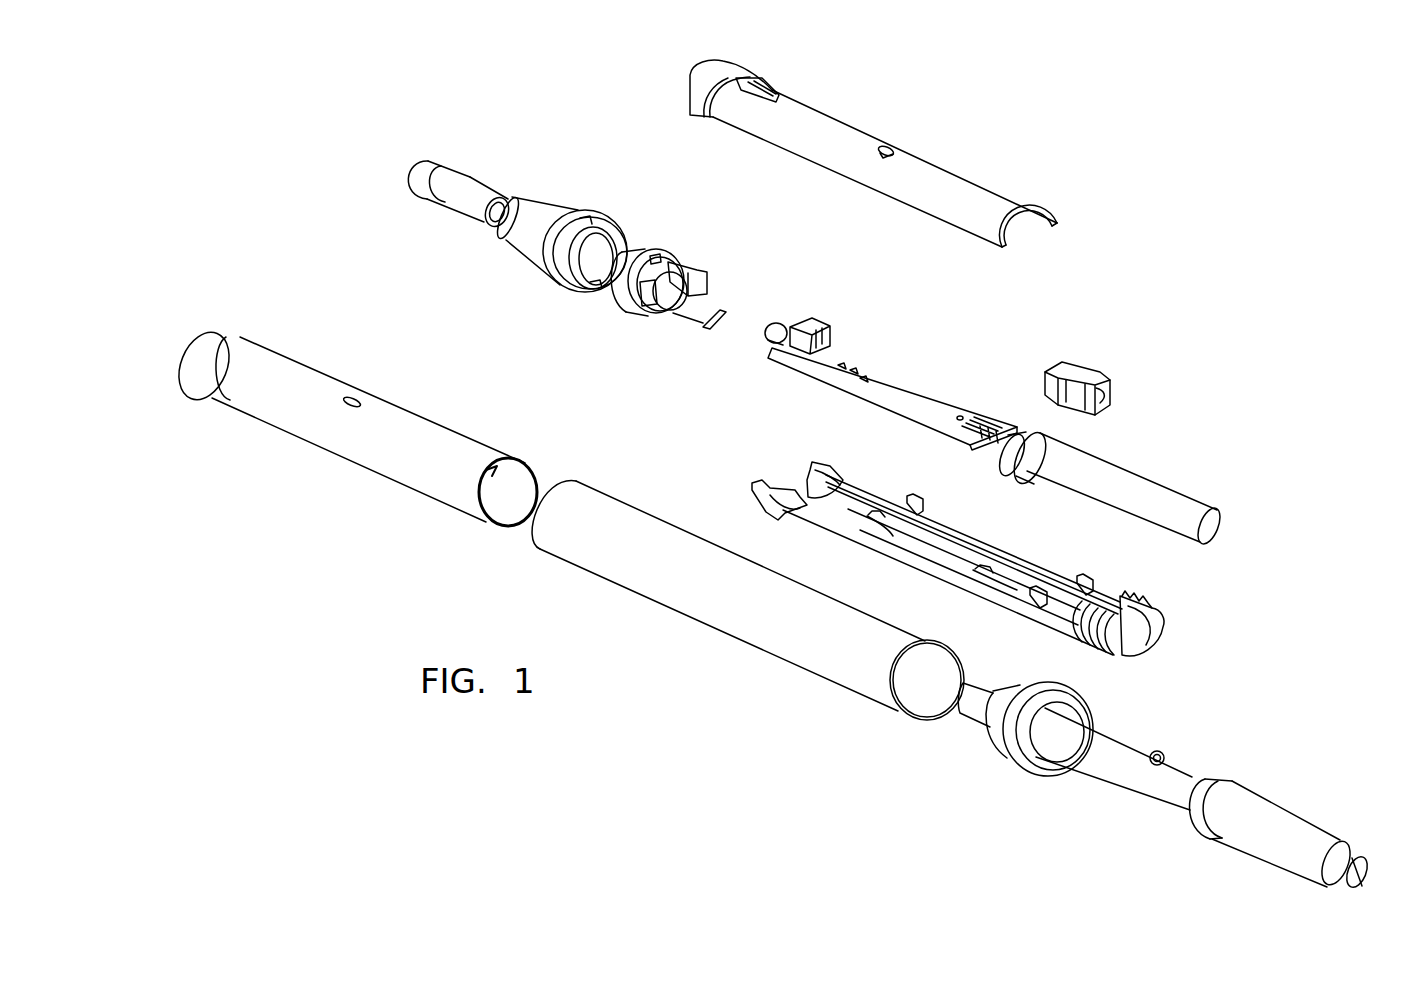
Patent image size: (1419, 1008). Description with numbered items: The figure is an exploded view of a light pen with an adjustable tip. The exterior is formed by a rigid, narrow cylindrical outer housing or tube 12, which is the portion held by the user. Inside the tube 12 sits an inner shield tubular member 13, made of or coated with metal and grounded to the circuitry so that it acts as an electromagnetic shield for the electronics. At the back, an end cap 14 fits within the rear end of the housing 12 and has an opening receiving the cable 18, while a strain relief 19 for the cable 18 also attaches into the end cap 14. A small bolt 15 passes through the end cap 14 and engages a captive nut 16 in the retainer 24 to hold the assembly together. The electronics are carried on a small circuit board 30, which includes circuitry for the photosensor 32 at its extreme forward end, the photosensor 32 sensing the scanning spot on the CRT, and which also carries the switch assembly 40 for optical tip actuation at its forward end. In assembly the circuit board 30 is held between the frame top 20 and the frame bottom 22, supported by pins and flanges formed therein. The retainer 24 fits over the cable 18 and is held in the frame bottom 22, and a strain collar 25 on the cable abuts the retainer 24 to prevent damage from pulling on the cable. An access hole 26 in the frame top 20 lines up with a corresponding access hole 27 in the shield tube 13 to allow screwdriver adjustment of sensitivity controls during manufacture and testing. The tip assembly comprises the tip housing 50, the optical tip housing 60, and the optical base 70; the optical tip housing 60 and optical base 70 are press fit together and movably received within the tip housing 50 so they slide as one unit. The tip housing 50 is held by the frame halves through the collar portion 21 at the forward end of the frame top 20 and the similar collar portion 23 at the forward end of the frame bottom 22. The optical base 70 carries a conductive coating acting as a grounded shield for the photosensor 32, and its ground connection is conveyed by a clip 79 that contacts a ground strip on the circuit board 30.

The outer housing or tube 12 is at (730, 636).
The inner shield tubular member 13 is at (362, 466).
The end cap 14 is at (1004, 772).
The bolt 15 is at (1132, 740).
The captive nut 16 is at (1063, 370).
The cable 18 is at (1131, 486).
The strain relief 19 is at (1255, 862).
The frame top 20 is at (984, 172).
The collar portion 21 is at (697, 90).
The frame bottom 22 is at (970, 602).
The collar portion 23 is at (756, 497).
The retainer 24 is at (1100, 380).
The strain collar 25 is at (1024, 474).
The access hole 26 is at (884, 148).
The access hole 27 is at (360, 400).
The circuit board 30 is at (922, 392).
The photosensor 32 is at (778, 322).
The switch assembly 40 is at (822, 314).
The tip housing 50 is at (552, 192).
The optical tip housing 60 is at (448, 158).
The optical base 70 is at (646, 246).
The clip 79 is at (722, 326).